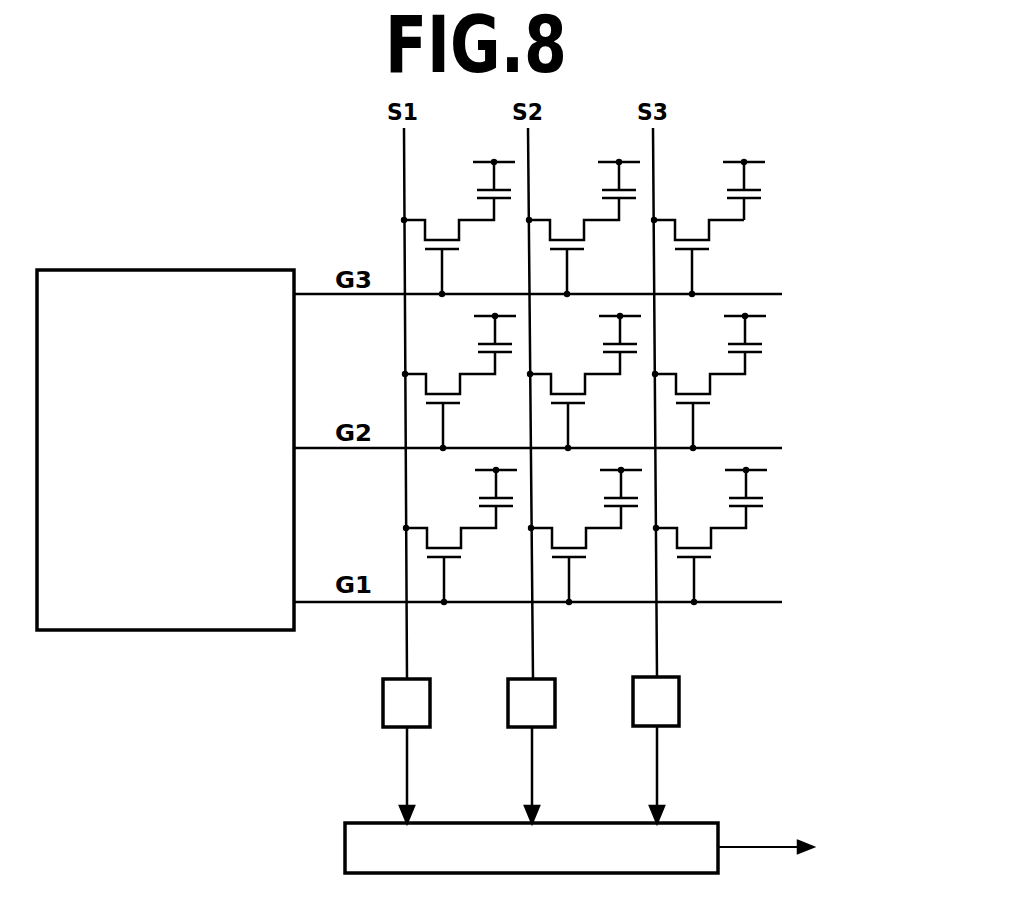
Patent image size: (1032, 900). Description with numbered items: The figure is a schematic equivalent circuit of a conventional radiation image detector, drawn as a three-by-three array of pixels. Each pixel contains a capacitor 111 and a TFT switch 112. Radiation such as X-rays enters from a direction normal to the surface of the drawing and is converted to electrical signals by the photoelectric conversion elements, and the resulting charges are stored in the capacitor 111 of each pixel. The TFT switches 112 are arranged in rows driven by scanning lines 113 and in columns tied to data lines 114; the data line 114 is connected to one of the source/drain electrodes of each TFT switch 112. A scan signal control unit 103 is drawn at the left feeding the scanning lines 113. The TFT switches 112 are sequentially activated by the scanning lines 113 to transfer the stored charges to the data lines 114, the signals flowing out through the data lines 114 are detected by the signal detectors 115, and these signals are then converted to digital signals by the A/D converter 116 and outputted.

The scan signal control unit 103 is at (168, 632).
The capacitor 111 is at (773, 187).
The TFT switch 112 is at (722, 244).
The scanning line 113 is at (782, 294).
The data line 114 is at (407, 655).
The signal detector 115 is at (393, 730).
The A/D converter 116 is at (682, 820).